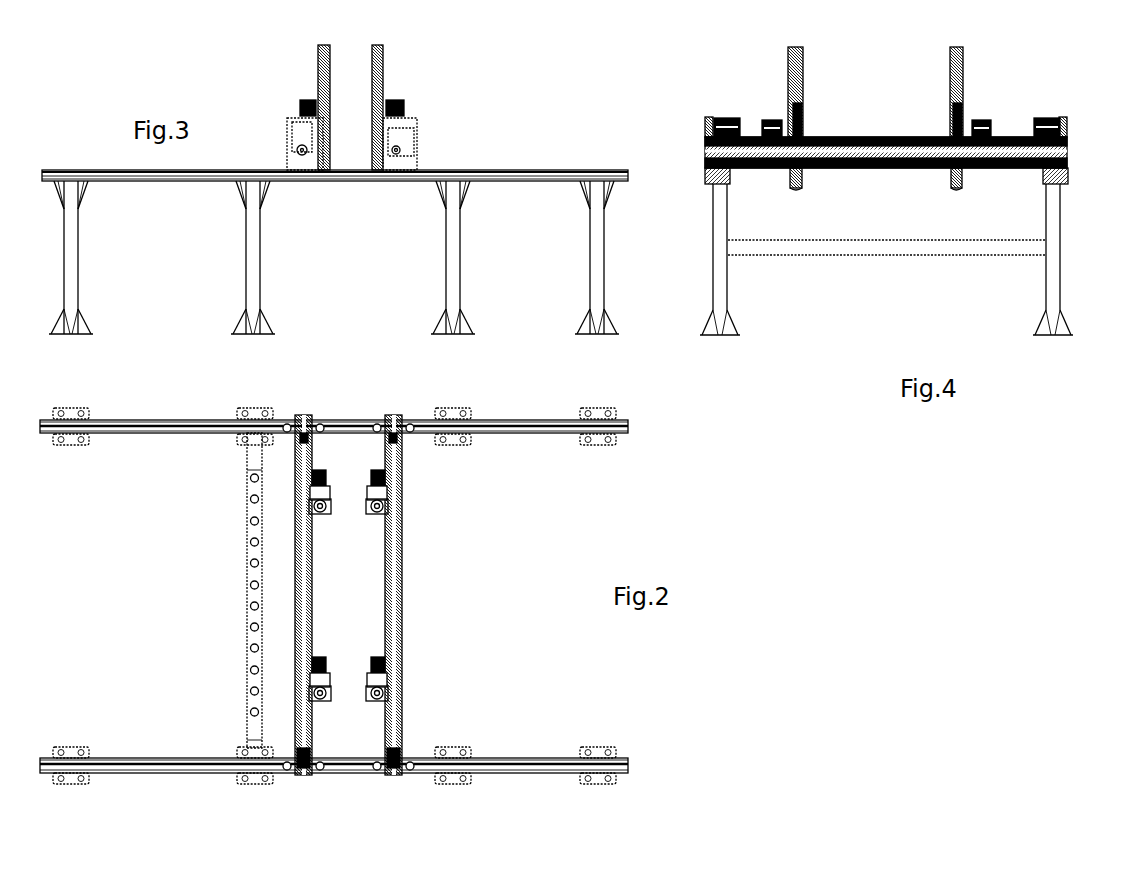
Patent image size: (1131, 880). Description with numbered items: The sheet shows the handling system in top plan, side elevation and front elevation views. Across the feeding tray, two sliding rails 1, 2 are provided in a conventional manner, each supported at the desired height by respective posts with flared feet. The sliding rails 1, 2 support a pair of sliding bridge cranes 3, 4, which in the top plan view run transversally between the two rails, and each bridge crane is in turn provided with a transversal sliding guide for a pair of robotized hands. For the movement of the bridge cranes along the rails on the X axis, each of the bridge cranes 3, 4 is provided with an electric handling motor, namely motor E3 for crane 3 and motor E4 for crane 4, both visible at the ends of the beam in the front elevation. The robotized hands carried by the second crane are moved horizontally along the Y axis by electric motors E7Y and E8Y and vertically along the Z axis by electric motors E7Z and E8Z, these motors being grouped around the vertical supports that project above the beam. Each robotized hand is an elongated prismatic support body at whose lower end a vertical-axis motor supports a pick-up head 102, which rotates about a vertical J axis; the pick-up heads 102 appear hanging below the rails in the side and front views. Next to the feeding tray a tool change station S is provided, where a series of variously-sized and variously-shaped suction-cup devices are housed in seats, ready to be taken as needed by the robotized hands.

In FIG. 3, the sliding rail 1 is at (528, 170).
In FIG. 2, the sliding rail 1 is at (532, 765).
In FIG. 2, the sliding rail 2 is at (525, 423).
In FIG. 2, the sliding bridge crane 3 is at (318, 600).
In FIG. 2, the sliding bridge crane 4 is at (402, 604).
In FIG. 4, the tool change station S is at (898, 246).
In FIG. 2, the tool change station S is at (247, 583).
In FIG. 3, the pick-up head 102 is at (325, 184).
In FIG. 4, the pick-up head 102 is at (796, 192).
In FIG. 4, the electric handling motor E3 is at (726, 118).
In FIG. 4, the electric handling motor E4 is at (1043, 118).
In FIG. 4, the electric motor for vertical movement E7Z is at (777, 120).
In FIG. 4, the electric motor for horizontal movement E7Y is at (805, 114).
In FIG. 4, the electric motor for vertical movement E8Z is at (977, 120).
In FIG. 4, the electric motor for horizontal movement E8Y is at (950, 116).